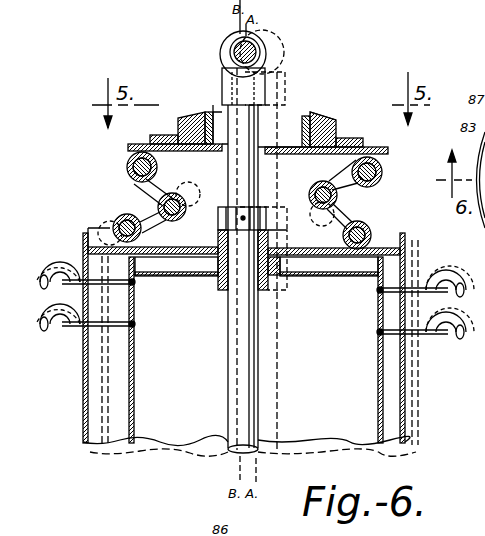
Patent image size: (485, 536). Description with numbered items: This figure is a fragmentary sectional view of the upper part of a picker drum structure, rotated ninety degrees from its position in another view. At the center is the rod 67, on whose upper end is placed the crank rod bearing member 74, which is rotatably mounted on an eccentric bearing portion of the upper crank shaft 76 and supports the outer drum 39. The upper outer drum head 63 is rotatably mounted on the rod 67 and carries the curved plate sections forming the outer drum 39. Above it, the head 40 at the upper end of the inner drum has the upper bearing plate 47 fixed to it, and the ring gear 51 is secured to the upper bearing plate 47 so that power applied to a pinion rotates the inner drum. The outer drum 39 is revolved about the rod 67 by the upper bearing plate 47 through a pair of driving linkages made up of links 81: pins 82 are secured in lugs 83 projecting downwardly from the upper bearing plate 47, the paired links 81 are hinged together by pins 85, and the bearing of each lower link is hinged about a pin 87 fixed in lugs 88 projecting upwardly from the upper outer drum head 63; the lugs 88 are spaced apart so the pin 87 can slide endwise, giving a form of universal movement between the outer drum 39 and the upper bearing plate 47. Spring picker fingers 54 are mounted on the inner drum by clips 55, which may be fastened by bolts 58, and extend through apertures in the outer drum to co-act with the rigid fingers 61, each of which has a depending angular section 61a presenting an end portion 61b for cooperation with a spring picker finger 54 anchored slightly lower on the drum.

The outer drum 39 is at (84, 378).
The head 40 is at (166, 276).
The upper bearing plate 47 is at (362, 150).
The ring gear 51 is at (318, 126).
The spring picker fingers 54 is at (72, 330).
The clips 55 is at (134, 314).
The bolts 58 is at (192, 198).
The rigid fingers 61 is at (62, 262).
The angular section 61a is at (58, 318).
The end portion 61b is at (52, 324).
The upper outer drum head 63 is at (304, 247).
The rod 67 is at (228, 358).
The crank rod bearing member 74 is at (222, 82).
The upper crank shaft 76 is at (262, 58).
The links 81 is at (158, 204).
The pins 82 is at (158, 170).
The lugs 83 is at (130, 160).
The pins 85 is at (332, 182).
The pin 87 is at (120, 218).
The lugs 88 is at (112, 230).